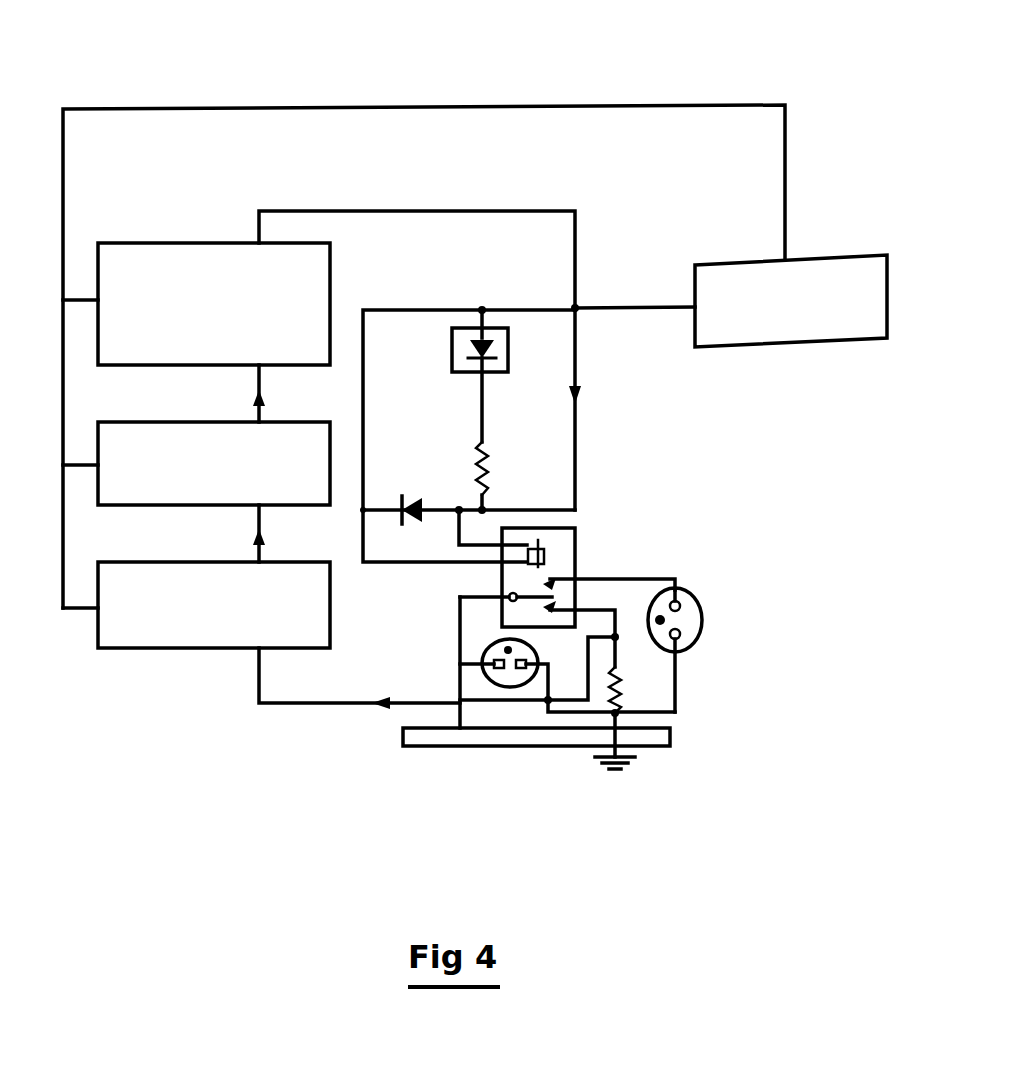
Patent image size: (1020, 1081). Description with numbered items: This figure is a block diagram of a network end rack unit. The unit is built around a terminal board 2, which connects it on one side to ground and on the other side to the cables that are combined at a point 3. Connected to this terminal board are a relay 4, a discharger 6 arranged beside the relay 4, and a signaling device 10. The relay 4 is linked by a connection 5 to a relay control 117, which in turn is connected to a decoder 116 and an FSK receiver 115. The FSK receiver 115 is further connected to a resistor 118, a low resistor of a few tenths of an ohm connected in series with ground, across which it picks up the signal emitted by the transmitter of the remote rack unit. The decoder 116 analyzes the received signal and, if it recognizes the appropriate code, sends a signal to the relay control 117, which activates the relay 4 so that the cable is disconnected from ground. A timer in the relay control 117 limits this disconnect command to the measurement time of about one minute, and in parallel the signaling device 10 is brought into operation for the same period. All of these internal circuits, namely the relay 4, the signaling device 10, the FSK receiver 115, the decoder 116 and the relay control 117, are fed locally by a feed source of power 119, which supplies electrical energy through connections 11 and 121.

The connection 121 is at (652, 98).
The relay control 117 is at (176, 243).
The decoder 116 is at (176, 422).
The FSK receiver 115 is at (176, 562).
The feed source of power 119 is at (704, 264).
The connection 11 is at (614, 298).
The signaling device 10 is at (467, 434).
The connection 5 is at (573, 452).
The relay 4 is at (576, 558).
The point 3 is at (460, 748).
The discharger 6 is at (490, 640).
The resistor 118 is at (618, 668).
The terminal board 2 is at (420, 746).